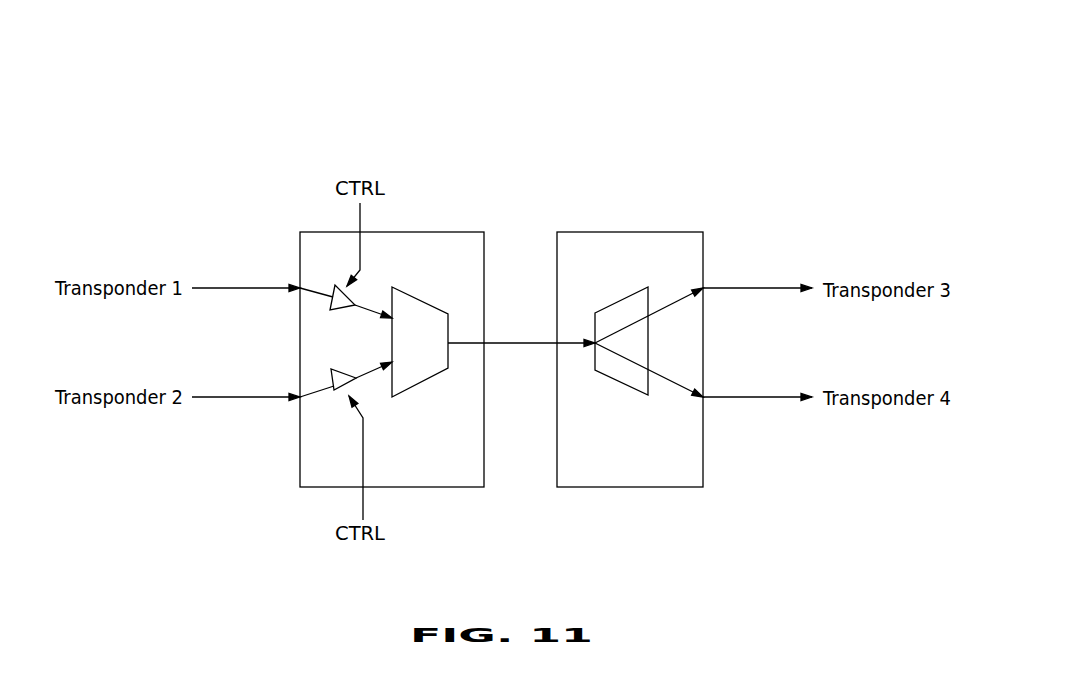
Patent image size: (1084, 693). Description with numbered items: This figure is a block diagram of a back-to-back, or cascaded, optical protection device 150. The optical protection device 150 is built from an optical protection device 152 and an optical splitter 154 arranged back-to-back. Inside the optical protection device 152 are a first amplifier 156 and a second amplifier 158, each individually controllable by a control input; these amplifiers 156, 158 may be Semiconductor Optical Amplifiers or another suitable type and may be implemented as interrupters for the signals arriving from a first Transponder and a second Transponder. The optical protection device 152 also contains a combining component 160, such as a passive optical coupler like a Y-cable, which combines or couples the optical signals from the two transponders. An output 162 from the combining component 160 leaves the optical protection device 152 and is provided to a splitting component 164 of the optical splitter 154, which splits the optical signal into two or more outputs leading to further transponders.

The back-to-back (cascaded) optical protection device 150 is at (283, 122).
The optical protection device 152 is at (431, 488).
The optical splitter 154 is at (628, 232).
The first amplifier 156 is at (330, 309).
The second amplifier 158 is at (334, 391).
The combining component 160 is at (423, 298).
The output 162 is at (508, 345).
The splitting component 164 is at (620, 302).